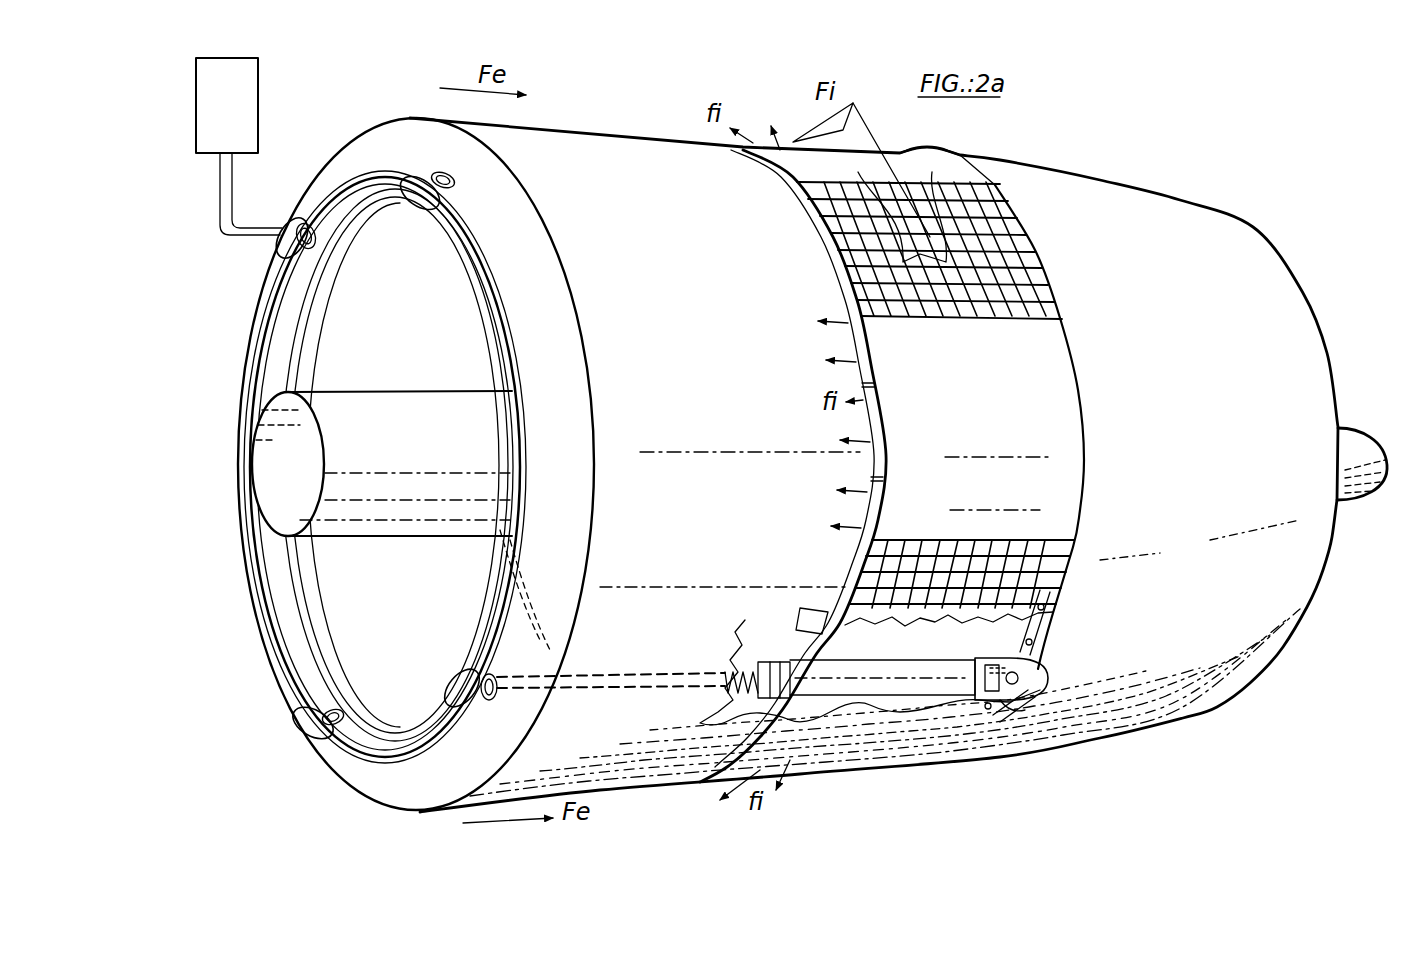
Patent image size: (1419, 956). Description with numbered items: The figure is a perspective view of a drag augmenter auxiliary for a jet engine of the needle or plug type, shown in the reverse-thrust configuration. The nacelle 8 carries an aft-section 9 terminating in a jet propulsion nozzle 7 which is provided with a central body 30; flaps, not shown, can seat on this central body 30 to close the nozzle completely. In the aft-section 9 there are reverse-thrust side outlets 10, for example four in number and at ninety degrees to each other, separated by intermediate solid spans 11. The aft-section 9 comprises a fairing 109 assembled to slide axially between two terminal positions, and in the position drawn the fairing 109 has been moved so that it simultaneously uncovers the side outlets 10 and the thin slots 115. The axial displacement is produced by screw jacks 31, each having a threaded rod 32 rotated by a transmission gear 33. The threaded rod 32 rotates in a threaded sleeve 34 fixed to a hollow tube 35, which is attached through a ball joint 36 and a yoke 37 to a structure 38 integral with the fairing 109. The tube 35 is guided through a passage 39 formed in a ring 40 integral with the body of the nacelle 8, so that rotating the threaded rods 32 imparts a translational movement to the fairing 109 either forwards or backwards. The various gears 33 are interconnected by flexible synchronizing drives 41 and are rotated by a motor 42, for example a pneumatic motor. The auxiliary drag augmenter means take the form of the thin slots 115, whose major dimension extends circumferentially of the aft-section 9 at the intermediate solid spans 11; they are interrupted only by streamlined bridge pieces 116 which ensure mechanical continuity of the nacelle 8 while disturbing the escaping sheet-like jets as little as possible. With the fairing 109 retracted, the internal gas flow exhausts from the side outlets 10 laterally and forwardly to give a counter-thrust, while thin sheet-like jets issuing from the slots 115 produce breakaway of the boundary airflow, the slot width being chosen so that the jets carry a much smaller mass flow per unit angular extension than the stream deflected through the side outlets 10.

The jet propulsion nozzle 7 is at (1300, 290).
The nacelle 8 is at (618, 130).
The aft-section 9 is at (1205, 228).
The reverse-thrust side outlets 10 is at (857, 250).
The intermediate solid spans 11 is at (833, 170).
The central body 30 is at (383, 403).
The screw jack 31 is at (770, 658).
The threaded rod 32 is at (687, 670).
The transmission gear 33 is at (287, 240).
The threaded sleeve 34 is at (743, 717).
The hollow tube 35 is at (880, 677).
The ball joint 36 is at (1023, 688).
The yoke 37 is at (1043, 677).
The structure 38 is at (1037, 628).
The passage 39 is at (790, 660).
The ring 40 is at (807, 630).
The flexible synchronizing drives 41 is at (477, 287).
The motor 42 is at (245, 96).
The fairing 109 is at (1050, 188).
The slots 115 is at (797, 163).
The bridge pieces 116 is at (883, 377).